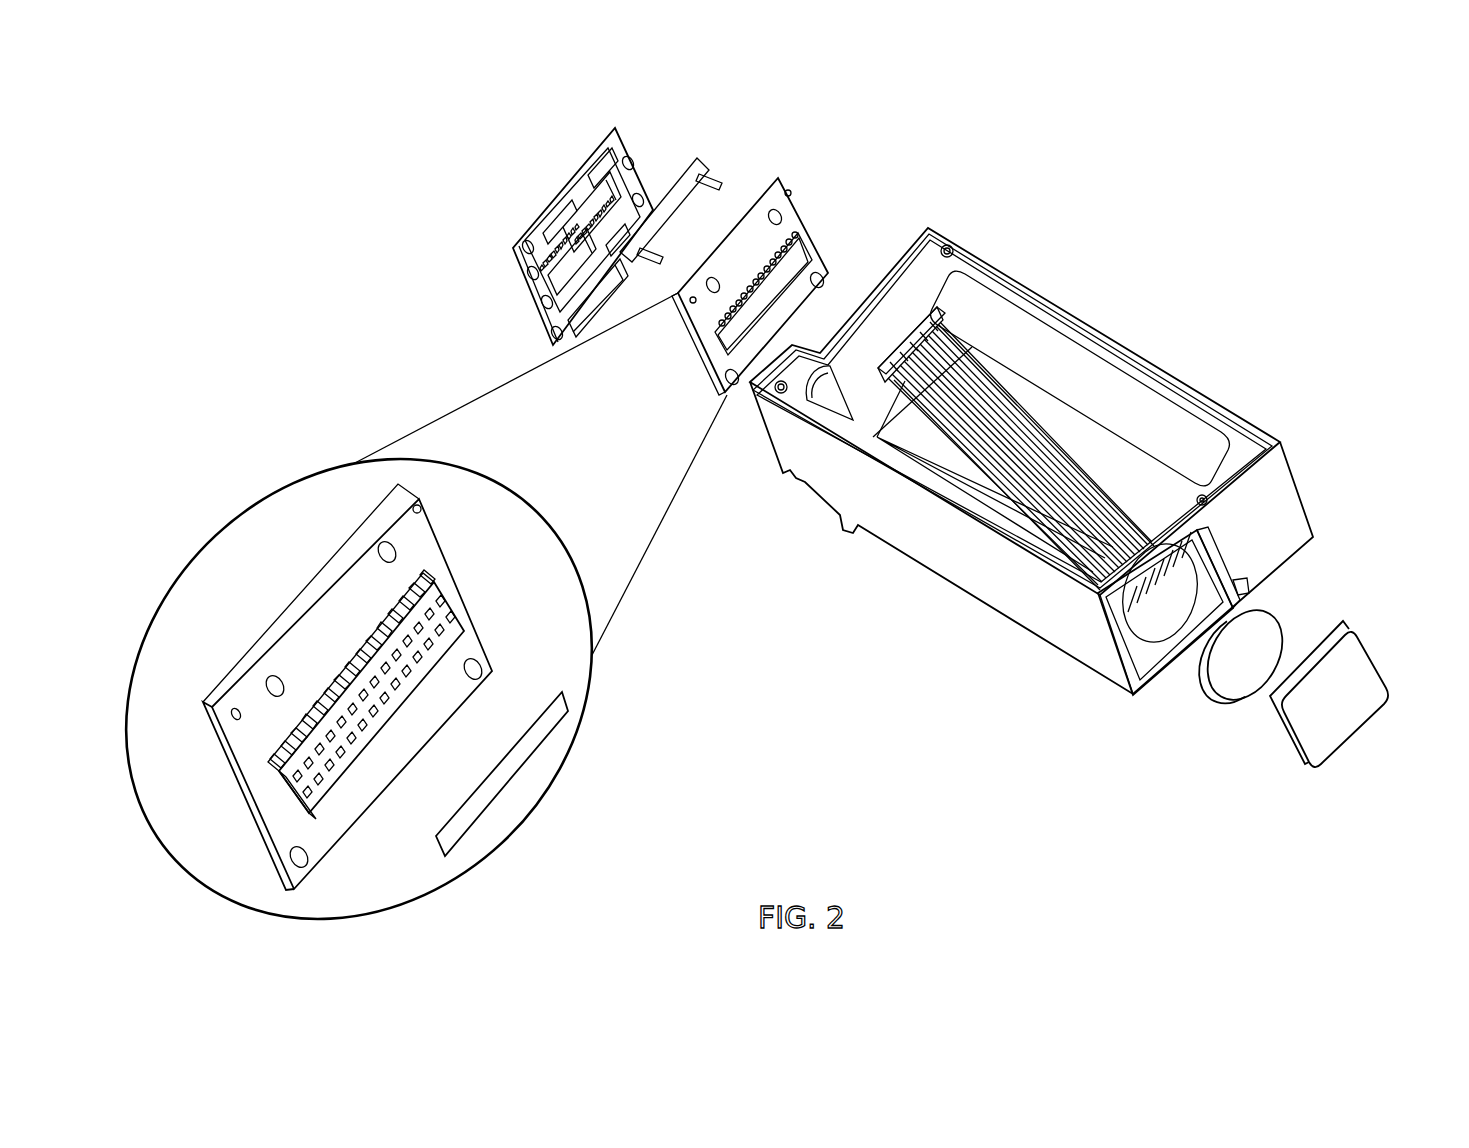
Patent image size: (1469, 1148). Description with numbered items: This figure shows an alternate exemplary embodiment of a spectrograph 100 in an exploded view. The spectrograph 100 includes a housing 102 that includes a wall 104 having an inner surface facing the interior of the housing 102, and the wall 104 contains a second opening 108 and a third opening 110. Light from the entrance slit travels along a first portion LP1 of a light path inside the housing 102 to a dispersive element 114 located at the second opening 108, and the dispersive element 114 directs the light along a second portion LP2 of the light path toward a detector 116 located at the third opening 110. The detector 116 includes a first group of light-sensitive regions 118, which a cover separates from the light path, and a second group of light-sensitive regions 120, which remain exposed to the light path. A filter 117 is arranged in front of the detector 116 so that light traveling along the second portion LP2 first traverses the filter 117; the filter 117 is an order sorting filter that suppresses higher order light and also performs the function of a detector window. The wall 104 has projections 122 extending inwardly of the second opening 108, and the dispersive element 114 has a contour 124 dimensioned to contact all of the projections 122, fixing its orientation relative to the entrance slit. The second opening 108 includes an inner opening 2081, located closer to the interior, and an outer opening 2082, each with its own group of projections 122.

The spectrograph 100 is at (440, 115).
The housing 102 is at (1031, 433).
The wall 104 is at (1124, 366).
The second opening 108 is at (1169, 664).
The third opening 110 is at (1015, 346).
The dispersive element 114 is at (1283, 731).
The detector 116 is at (447, 601).
The filter 117 is at (492, 786).
The first group of light-sensitive regions 118 is at (283, 772).
The second group of light-sensitive regions 120 is at (462, 627).
The projections 122 is at (1140, 555).
The contour 124 is at (1358, 651).
The inner opening 2081 is at (1160, 678).
The outer opening 2082 is at (1301, 498).
The first portion of the light path LP1 is at (989, 597).
The second portion of the light path LP2 is at (1024, 364).